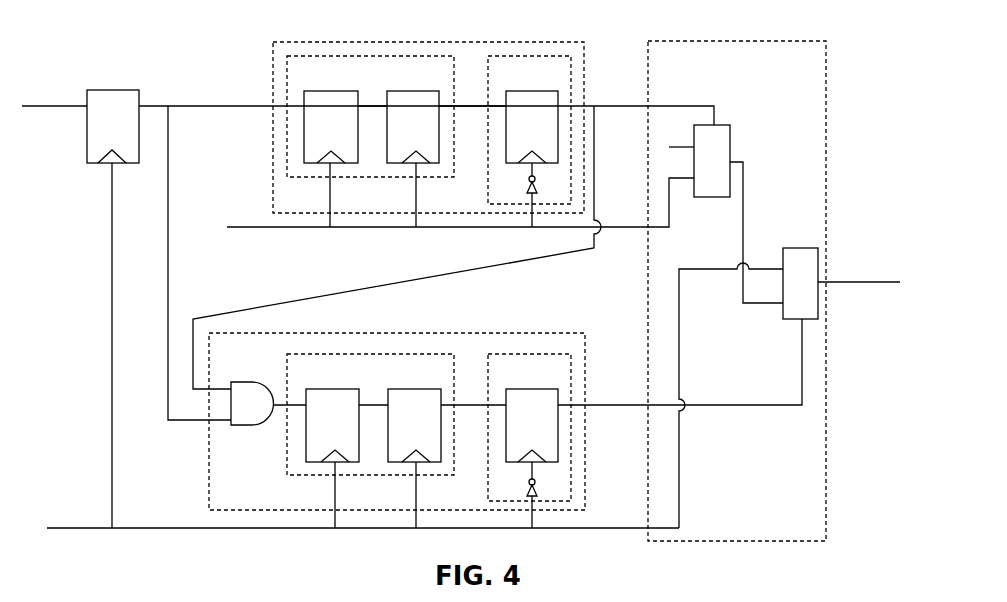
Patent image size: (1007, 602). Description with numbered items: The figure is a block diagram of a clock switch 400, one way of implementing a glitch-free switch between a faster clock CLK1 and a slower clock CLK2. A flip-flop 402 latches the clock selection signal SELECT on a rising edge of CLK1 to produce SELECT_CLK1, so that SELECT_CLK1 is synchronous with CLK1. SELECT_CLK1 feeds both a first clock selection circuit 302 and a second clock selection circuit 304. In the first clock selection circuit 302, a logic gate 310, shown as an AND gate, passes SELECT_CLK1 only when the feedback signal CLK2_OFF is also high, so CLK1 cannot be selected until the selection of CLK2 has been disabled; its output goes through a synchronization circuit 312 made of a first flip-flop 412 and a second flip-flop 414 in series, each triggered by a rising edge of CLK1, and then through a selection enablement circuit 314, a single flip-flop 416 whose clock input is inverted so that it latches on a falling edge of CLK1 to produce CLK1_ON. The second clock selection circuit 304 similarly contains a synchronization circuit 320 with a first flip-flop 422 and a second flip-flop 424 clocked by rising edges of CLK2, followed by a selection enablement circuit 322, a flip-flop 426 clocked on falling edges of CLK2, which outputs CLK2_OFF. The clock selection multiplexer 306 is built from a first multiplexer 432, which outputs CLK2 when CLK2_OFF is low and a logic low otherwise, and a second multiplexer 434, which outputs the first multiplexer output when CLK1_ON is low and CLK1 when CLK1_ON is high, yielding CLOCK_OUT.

The clock switch 400 is at (851, 56).
The flip-flop 402 is at (113, 126).
The first clock selection circuit 302 is at (432, 333).
The second clock selection circuit 304 is at (436, 42).
The clock selection multiplexer 306 is at (735, 41).
The logic gate 310 is at (246, 382).
The synchronization circuit 312 is at (445, 476).
The selection enablement circuit 314 is at (488, 381).
The synchronization circuit 320 is at (445, 178).
The selection enablement circuit 322 is at (488, 83).
The first flip-flop 412 is at (332, 458).
The second flip-flop 414 is at (414, 458).
The flip-flop 416 is at (532, 458).
The first flip-flop 422 is at (331, 159).
The second flip-flop 424 is at (413, 159).
The flip-flop 426 is at (532, 159).
The first multiplexer 432 is at (732, 131).
The second multiplexer 434 is at (797, 248).